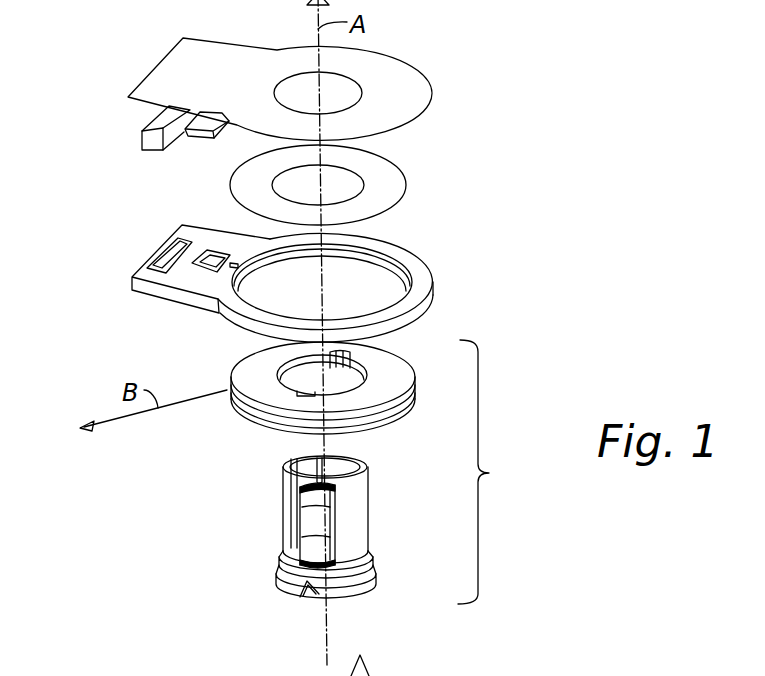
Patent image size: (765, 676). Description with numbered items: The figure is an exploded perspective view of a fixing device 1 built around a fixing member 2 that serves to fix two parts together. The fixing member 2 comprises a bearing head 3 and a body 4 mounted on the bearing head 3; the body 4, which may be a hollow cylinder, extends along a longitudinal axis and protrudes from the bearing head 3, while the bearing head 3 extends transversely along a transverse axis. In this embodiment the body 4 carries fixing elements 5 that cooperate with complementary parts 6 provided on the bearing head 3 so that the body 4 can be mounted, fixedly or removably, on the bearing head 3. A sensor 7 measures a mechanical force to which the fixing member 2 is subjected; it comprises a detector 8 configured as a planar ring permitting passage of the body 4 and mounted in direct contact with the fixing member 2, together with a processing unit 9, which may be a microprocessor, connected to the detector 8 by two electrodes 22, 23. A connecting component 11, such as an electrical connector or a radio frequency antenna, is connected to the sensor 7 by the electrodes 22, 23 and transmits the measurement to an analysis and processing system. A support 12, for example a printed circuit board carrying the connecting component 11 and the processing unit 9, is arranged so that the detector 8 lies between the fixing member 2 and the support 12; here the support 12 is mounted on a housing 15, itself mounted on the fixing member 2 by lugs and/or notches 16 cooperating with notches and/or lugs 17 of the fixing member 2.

The fixing device 1 is at (488, 78).
The fixing member 2 is at (485, 472).
The bearing head 3 is at (335, 358).
The body 4 is at (288, 518).
The fixing elements 5 is at (307, 593).
The complementary parts 6 is at (343, 354).
The sensor 7 is at (177, 180).
The detector 8 is at (399, 182).
The processing unit 9 is at (192, 135).
The connecting component 11 is at (162, 126).
The support 12 is at (182, 60).
The housing 15 is at (271, 283).
The lugs and/or notches 16 is at (262, 269).
The notches and/or lugs 17 is at (260, 410).
The electrode 22 is at (230, 179).
The electrode 23 is at (233, 171).